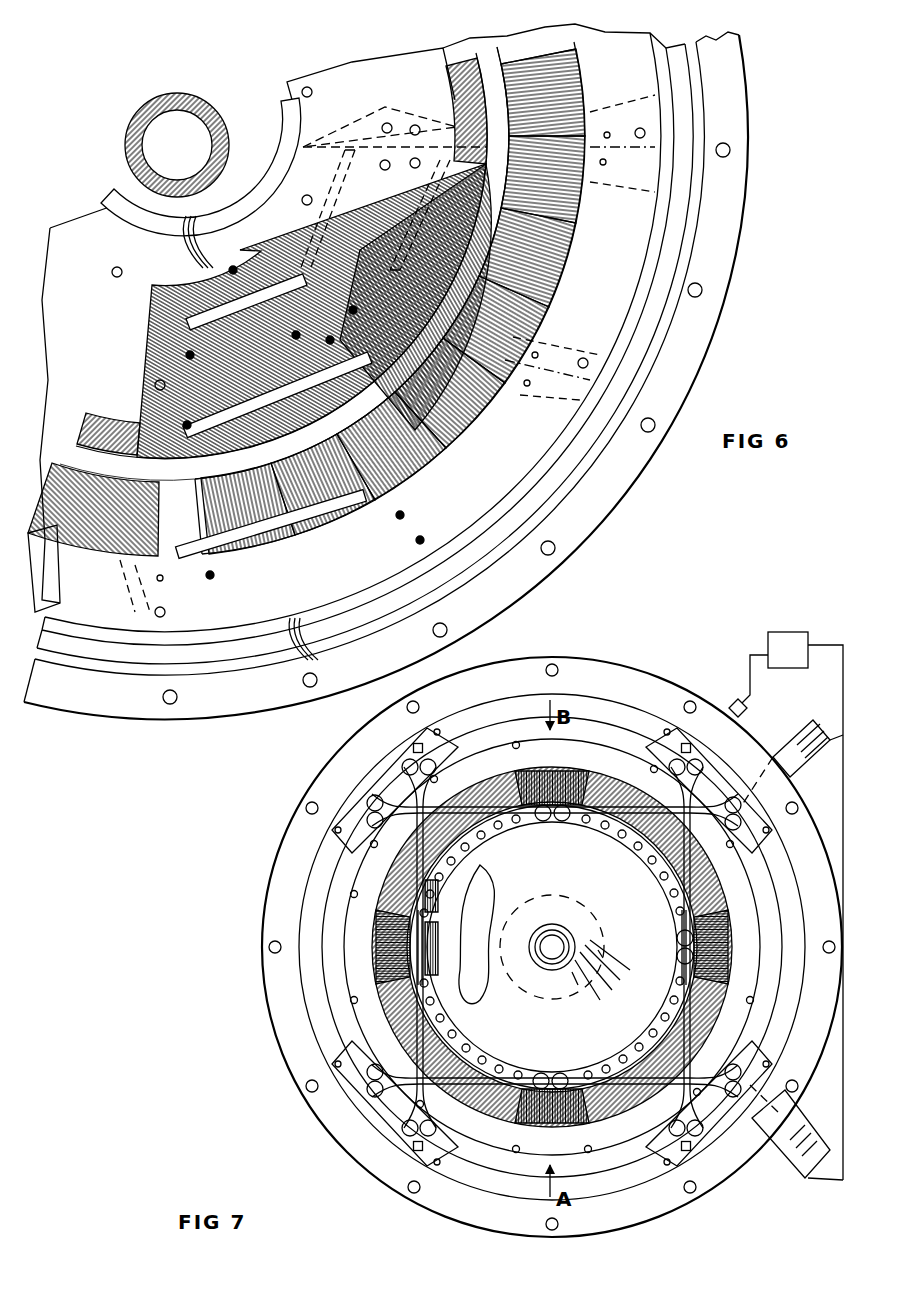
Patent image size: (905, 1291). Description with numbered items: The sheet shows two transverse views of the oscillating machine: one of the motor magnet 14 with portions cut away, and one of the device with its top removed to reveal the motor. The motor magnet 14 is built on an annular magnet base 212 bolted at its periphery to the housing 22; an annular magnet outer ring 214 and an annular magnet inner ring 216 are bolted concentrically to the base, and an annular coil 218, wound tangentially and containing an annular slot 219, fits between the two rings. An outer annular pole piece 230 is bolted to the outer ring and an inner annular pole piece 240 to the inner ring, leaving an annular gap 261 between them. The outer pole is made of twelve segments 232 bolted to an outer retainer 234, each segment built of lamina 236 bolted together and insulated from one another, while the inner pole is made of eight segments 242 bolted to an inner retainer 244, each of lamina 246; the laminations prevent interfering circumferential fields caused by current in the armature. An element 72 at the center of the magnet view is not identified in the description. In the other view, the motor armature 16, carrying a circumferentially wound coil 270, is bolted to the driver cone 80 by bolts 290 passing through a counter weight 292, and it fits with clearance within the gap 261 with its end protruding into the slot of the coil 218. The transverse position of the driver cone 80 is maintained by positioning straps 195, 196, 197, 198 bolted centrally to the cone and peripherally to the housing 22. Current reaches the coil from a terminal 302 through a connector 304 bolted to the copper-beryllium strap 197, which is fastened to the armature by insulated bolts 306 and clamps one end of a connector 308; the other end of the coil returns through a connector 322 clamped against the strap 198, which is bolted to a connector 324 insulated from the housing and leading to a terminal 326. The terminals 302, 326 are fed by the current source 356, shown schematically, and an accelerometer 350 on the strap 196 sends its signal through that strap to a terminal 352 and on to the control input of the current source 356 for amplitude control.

In FIG. 6, the motor magnet 14 is at (668, 213).
In FIG. 7, the motor magnet 14 is at (345, 878).
In FIG. 7, the motor armature 16 is at (452, 876).
In FIG. 7, the housing 22 is at (265, 928).
In FIG. 6, the shaft 72 is at (165, 100).
In FIG. 7, the driver cone 80 is at (557, 937).
In FIG. 7, the positioning strap 195 is at (427, 1100).
In FIG. 7, the positioning strap 196 is at (676, 1122).
In FIG. 7, the positioning strap 197 is at (554, 795).
In FIG. 7, the positioning strap 198 is at (507, 1077).
In FIG. 6, the annular magnet base 212 is at (78, 712).
In FIG. 6, the annular magnet outer ring 214 is at (107, 635).
In FIG. 6, the annular magnet inner ring 216 is at (110, 210).
In FIG. 6, the annular coil 218 is at (33, 535).
In FIG. 6, the annular slot 219 is at (40, 490).
In FIG. 6, the outer annular pole piece 230 is at (83, 533).
In FIG. 7, the outer annular pole piece 230 is at (385, 957).
In FIG. 6, the segments 232 is at (540, 50).
In FIG. 6, the outer retainer 234 is at (632, 53).
In FIG. 7, the outer retainer 234 is at (335, 990).
In FIG. 6, the lamina 236 is at (310, 652).
In FIG. 6, the inner annular pole piece 240 is at (83, 427).
In FIG. 7, the inner annular pole piece 240 is at (427, 947).
In FIG. 6, the segments 242 is at (460, 55).
In FIG. 6, the inner retainer 244 is at (335, 65).
In FIG. 7, the inner retainer 244 is at (470, 988).
In FIG. 6, the lamina 246 is at (213, 233).
In FIG. 6, the annular gap 261 is at (123, 470).
In FIG. 7, the annular gap 261 is at (405, 914).
In FIG. 7, the coil 270 is at (432, 915).
In FIG. 7, the bolts 290 is at (620, 1062).
In FIG. 7, the counter weight 292 is at (655, 1045).
In FIG. 7, the terminal 302 is at (803, 735).
In FIG. 7, the connector 304 is at (740, 845).
In FIG. 7, the insulated bolts 306 is at (562, 822).
In FIG. 7, the connector 308 is at (527, 777).
In FIG. 7, the connector 322 is at (552, 1100).
In FIG. 7, the connector 324 is at (717, 1060).
In FIG. 7, the terminal 326 is at (780, 1160).
In FIG. 7, the accelerometer 350 is at (688, 950).
In FIG. 7, the terminal 352 is at (735, 702).
In FIG. 7, the current source 356 is at (788, 632).